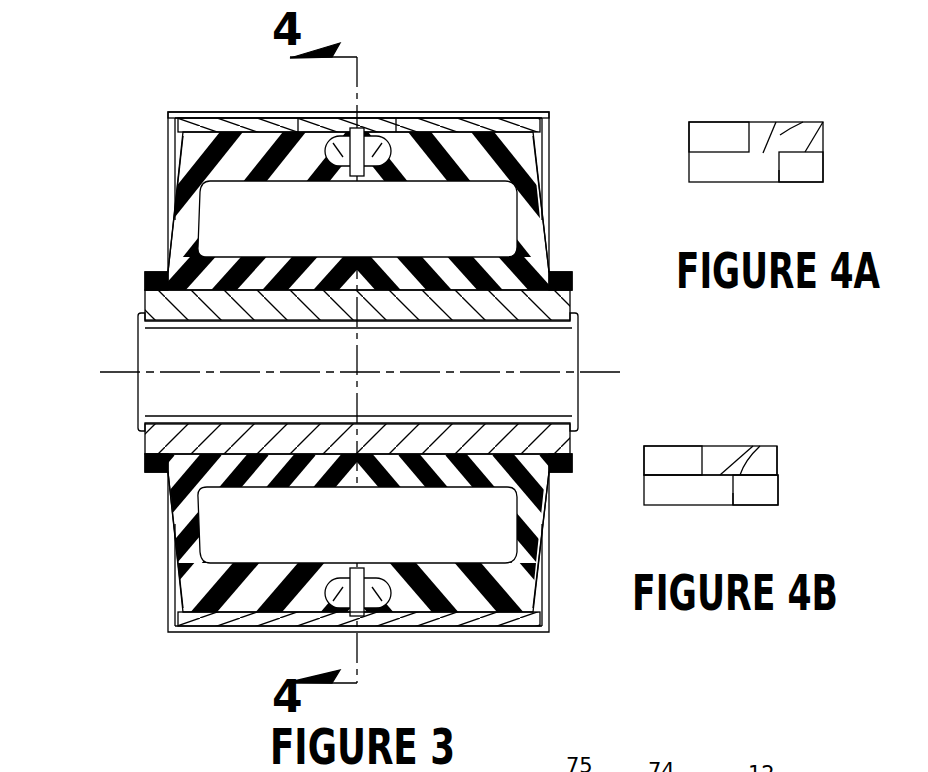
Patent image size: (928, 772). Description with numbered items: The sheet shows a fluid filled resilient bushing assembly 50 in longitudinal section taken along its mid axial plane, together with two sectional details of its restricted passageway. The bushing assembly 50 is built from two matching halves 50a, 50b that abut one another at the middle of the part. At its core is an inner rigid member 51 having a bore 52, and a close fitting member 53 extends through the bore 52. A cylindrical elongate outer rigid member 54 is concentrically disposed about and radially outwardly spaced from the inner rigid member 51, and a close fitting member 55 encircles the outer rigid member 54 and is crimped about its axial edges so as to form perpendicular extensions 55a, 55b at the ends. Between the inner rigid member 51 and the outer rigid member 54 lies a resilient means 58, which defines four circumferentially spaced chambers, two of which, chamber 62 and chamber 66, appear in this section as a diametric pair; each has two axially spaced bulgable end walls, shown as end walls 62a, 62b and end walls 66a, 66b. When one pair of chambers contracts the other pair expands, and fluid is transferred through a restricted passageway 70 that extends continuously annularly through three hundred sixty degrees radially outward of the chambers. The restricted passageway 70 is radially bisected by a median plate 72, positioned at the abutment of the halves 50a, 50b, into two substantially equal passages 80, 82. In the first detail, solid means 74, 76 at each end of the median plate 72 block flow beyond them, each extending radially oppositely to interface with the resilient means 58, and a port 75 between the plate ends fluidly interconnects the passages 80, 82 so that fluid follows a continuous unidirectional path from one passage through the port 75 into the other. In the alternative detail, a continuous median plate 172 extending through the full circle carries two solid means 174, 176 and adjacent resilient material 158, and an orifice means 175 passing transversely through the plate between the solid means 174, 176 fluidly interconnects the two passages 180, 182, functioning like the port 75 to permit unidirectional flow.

In FIG. 3, the bushing assembly 50 is at (562, 95).
In FIG. 3, the matching half 50a is at (513, 632).
In FIG. 3, the matching half 50b is at (222, 632).
In FIG. 3, the inner rigid member 51 is at (163, 300).
In FIG. 3, the bore 52 is at (172, 350).
In FIG. 3, the close fitting member 53 is at (183, 413).
In FIG. 3, the outer rigid member 54 is at (200, 112).
In FIG. 3, the close fitting member 55 is at (465, 112).
In FIG. 3, the perpendicular extension 55a is at (549, 130).
In FIG. 3, the housing left wall 55b is at (165, 133).
In FIG. 3, the resilient means 58 is at (173, 112).
In FIG. 4A, the resilient means 58 is at (748, 220).
In FIG. 3, the chamber 62 is at (270, 230).
In FIG. 3, the bulgable end wall 62a is at (533, 215).
In FIG. 3, the bulgable end wall 62b is at (193, 205).
In FIG. 3, the chamber 66 is at (428, 522).
In FIG. 3, the bulgable end wall 66a is at (527, 537).
In FIG. 3, the bulgable end wall 66b is at (190, 537).
In FIG. 3, the restricted passageway 70 is at (334, 118).
In FIG. 3, the median plate 72 is at (372, 605).
In FIG. 4A, the median plate 72 is at (690, 223).
In FIG. 4A, the solid means 74 is at (772, 183).
In FIG. 4A, the port 75 is at (803, 122).
In FIG. 4A, the solid means 76 is at (776, 122).
In FIG. 3, the passage 80 is at (396, 112).
In FIG. 4A, the passage 80 is at (807, 168).
In FIG. 3, the passage 82 is at (298, 112).
In FIG. 4A, the passage 82 is at (702, 138).
In FIG. 4B, the retaining plate (alt.) 158 is at (687, 443).
In FIG. 4B, the median plate 172 is at (780, 458).
In FIG. 4B, the solid means 174 is at (727, 497).
In FIG. 4B, the orifice means 175 is at (720, 475).
In FIG. 4B, the solid means 176 is at (705, 457).
In FIG. 4B, the passage 180 is at (760, 495).
In FIG. 4B, the passage 182 is at (670, 455).